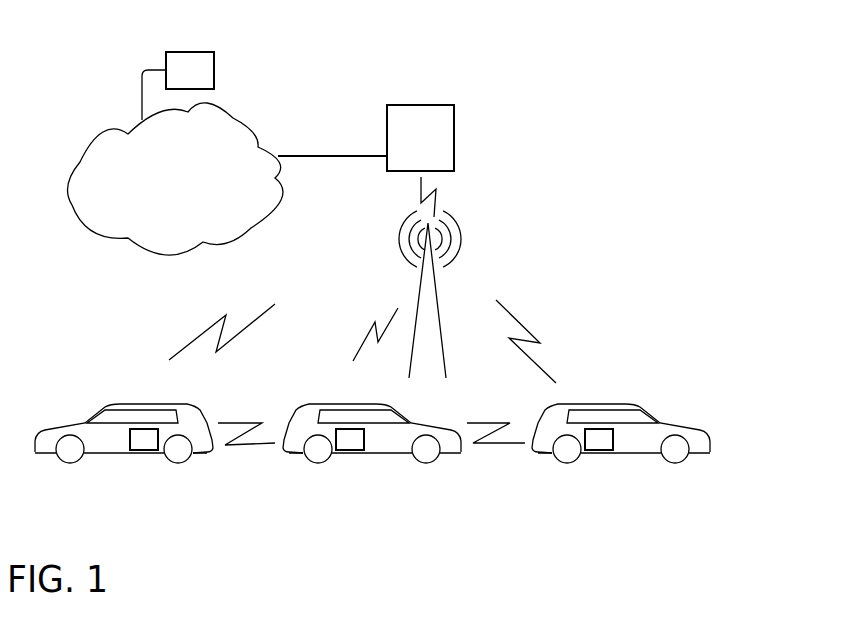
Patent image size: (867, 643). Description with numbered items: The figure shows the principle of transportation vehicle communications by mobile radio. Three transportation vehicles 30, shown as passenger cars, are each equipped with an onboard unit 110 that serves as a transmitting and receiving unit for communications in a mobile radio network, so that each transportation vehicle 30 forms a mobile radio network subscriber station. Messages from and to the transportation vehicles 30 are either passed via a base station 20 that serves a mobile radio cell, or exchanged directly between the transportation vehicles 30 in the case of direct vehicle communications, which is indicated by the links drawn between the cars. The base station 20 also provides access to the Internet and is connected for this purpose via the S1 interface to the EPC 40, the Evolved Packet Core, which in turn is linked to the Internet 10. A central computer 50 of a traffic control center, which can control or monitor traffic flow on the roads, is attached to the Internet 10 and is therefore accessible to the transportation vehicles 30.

The Internet 10 is at (205, 133).
The base station 20 is at (435, 275).
The transportation vehicle 30 is at (100, 444).
The EPC (Evolved Packet Core) 40 is at (427, 142).
The central computer 50 is at (195, 69).
The onboard unit 110 is at (147, 450).